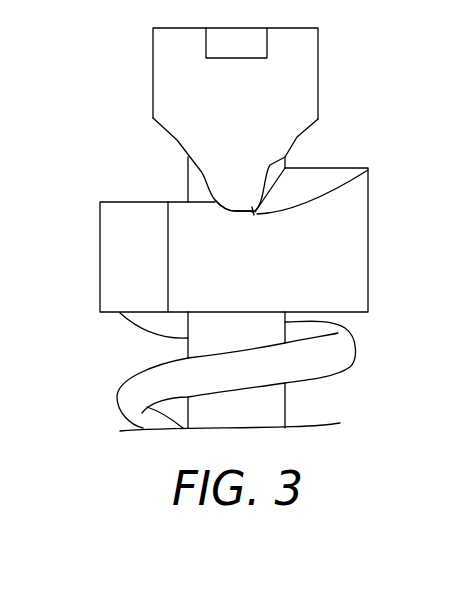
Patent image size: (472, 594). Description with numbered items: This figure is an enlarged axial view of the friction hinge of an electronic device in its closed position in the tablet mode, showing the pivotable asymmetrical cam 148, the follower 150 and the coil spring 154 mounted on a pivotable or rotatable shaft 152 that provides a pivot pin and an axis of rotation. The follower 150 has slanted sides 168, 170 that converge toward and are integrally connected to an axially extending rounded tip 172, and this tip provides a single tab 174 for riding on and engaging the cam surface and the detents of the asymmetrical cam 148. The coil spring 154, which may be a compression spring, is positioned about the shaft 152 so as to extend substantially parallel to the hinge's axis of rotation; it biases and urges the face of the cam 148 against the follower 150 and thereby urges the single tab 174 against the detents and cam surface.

The asymmetrical cam 148 is at (100, 256).
The follower 150 is at (231, 143).
The shaft 152 is at (286, 405).
The coil spring 154 is at (355, 352).
The slanted side 168 is at (176, 140).
The slanted side 170 is at (296, 138).
The rounded tip 172 is at (228, 212).
The single tab 174 is at (255, 213).